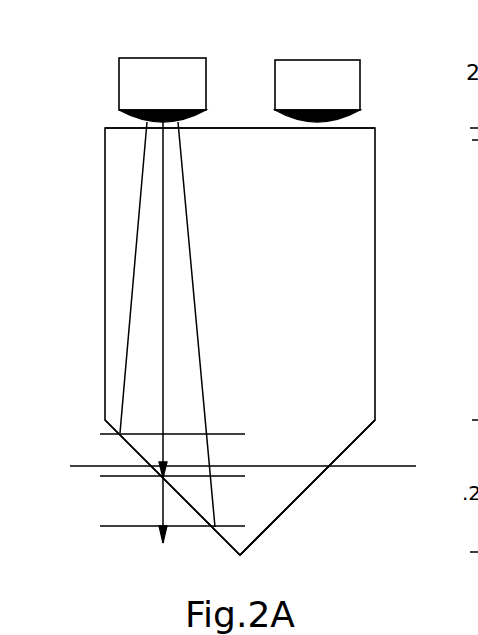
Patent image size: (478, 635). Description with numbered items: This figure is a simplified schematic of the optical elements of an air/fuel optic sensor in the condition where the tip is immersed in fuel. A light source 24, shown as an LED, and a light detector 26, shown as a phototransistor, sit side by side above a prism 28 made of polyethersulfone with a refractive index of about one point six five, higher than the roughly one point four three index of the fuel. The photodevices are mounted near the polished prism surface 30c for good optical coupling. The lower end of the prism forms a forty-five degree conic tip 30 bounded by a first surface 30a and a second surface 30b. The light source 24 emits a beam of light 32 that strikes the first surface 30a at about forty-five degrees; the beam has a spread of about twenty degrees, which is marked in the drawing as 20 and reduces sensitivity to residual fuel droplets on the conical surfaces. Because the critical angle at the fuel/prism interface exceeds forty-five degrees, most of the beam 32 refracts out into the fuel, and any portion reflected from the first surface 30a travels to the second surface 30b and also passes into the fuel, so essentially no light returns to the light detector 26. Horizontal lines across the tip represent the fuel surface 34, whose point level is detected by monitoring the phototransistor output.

The light source 24 is at (119, 63).
The light detector 26 is at (360, 103).
The prism 28 is at (375, 358).
The conic tip 30 is at (300, 506).
The first surface 30a is at (230, 546).
The second surface 30b is at (355, 445).
The prism surface 30c is at (368, 128).
The beam of light 32 is at (209, 297).
The beam divergence angle 20 degrees 20 is at (123, 212).
The fuel surface 34 is at (84, 466).